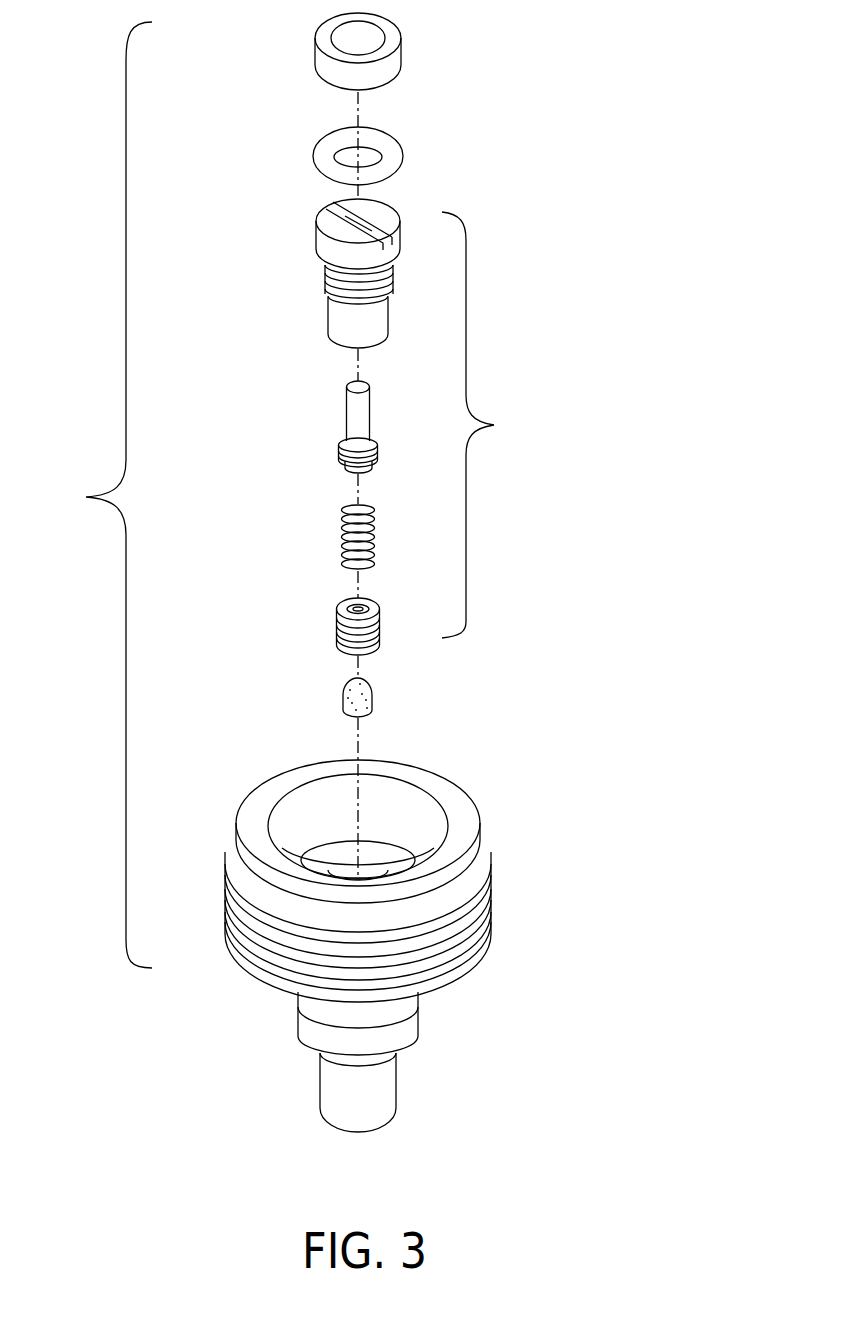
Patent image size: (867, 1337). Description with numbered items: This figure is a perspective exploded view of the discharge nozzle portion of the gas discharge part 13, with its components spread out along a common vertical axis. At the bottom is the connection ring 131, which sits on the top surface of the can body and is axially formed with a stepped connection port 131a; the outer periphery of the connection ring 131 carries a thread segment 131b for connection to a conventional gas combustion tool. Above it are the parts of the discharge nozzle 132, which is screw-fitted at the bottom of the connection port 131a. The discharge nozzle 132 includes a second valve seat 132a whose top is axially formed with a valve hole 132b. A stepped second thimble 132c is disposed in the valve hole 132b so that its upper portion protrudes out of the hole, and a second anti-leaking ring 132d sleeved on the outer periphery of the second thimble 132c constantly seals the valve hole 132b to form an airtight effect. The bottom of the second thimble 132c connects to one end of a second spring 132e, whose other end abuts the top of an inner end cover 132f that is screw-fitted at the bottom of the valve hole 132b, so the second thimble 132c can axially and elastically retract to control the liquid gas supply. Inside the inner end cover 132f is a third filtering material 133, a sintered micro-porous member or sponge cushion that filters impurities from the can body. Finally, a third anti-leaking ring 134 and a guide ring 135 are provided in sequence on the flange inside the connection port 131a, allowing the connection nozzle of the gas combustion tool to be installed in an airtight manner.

The gas discharge part 13 is at (98, 495).
The connection ring 131 is at (436, 909).
The connection port 131a is at (393, 807).
The thread segment 131b is at (475, 917).
The discharge nozzle 132 is at (495, 425).
The second valve seat 132a is at (376, 235).
The valve hole 132b is at (362, 222).
The second thimble 132c is at (353, 412).
The second anti-leaking ring 132d is at (340, 455).
The second spring 132e is at (343, 530).
The inner end cover 132f is at (337, 620).
The third filtering material 133 is at (347, 685).
The third anti-leaking ring 134 is at (327, 150).
The guide ring 135 is at (397, 58).